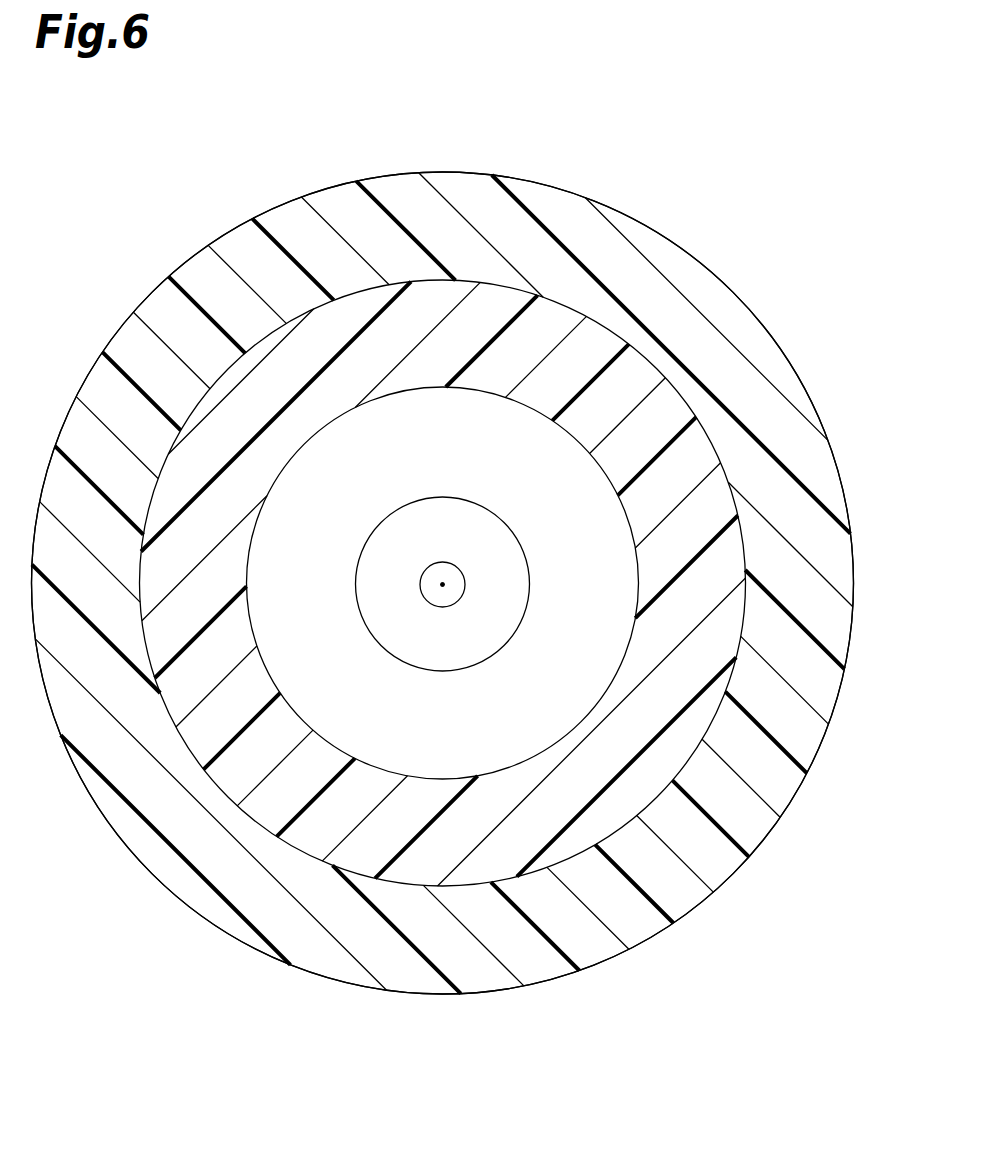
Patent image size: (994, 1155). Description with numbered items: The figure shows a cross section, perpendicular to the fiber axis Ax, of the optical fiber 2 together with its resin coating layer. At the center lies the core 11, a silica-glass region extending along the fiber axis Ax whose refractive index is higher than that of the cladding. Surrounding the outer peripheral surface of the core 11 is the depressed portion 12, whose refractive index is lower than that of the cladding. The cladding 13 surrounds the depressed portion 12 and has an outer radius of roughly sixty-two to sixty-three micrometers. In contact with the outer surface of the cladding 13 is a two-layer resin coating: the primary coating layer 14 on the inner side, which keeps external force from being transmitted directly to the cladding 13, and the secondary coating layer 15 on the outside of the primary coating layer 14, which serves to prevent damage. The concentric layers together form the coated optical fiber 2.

The optical fiber 2 is at (744, 239).
The core 11 is at (456, 580).
The depressed portion 12 is at (497, 618).
The cladding 13 is at (630, 563).
The primary coating layer 14 is at (732, 560).
The secondary coating layer 15 is at (838, 580).
The fiber axis Ax is at (441, 590).